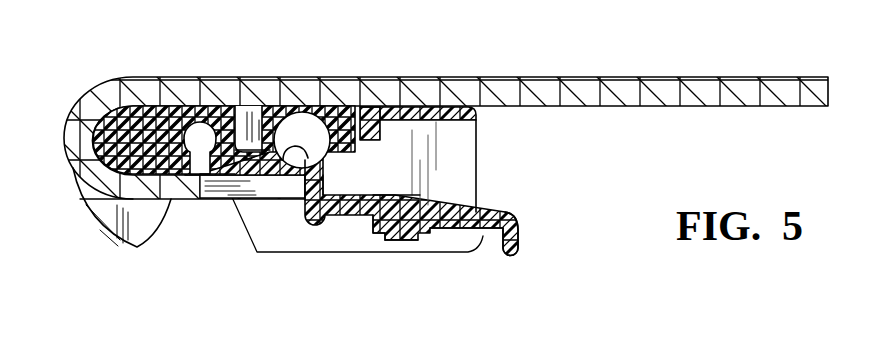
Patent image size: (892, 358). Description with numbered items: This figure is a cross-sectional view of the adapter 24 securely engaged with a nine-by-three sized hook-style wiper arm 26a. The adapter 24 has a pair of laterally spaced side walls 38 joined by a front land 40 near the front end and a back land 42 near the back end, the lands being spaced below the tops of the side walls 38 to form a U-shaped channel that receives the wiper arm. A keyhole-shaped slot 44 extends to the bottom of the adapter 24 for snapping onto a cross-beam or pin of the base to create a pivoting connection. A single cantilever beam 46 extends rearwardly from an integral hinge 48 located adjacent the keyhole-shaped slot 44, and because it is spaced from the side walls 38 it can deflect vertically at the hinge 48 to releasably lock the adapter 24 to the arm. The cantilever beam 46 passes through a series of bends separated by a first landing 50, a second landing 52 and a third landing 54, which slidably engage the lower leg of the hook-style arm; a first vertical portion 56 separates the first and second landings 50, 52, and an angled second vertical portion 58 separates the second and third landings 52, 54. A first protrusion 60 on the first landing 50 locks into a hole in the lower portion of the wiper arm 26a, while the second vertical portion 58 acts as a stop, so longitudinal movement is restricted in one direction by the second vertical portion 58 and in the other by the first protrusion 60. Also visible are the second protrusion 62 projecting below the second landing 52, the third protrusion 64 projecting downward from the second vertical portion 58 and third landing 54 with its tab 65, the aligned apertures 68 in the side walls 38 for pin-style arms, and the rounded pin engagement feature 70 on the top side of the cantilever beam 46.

The adapter 24 is at (481, 168).
The 9×3 sized hook-style wiper arm 26a is at (692, 78).
The side wall 38 is at (412, 142).
The front land 40 is at (163, 113).
The back land 42 is at (382, 107).
The keyhole-shaped slot 44 is at (200, 145).
The cantilever beam 46 is at (523, 224).
The integral hinge 48 is at (250, 148).
The first landing 50 is at (262, 165).
The second landing 52 is at (352, 208).
The third landing 54 is at (462, 224).
The first vertical portion 56 is at (323, 172).
The second vertical portion 58 is at (393, 195).
The first protrusion 60 is at (233, 186).
The second protrusion 62 is at (283, 168).
The third protrusion 64 is at (421, 243).
The tab 65 is at (384, 237).
The aperture 68 is at (302, 138).
The pin engagement feature 70 is at (243, 198).